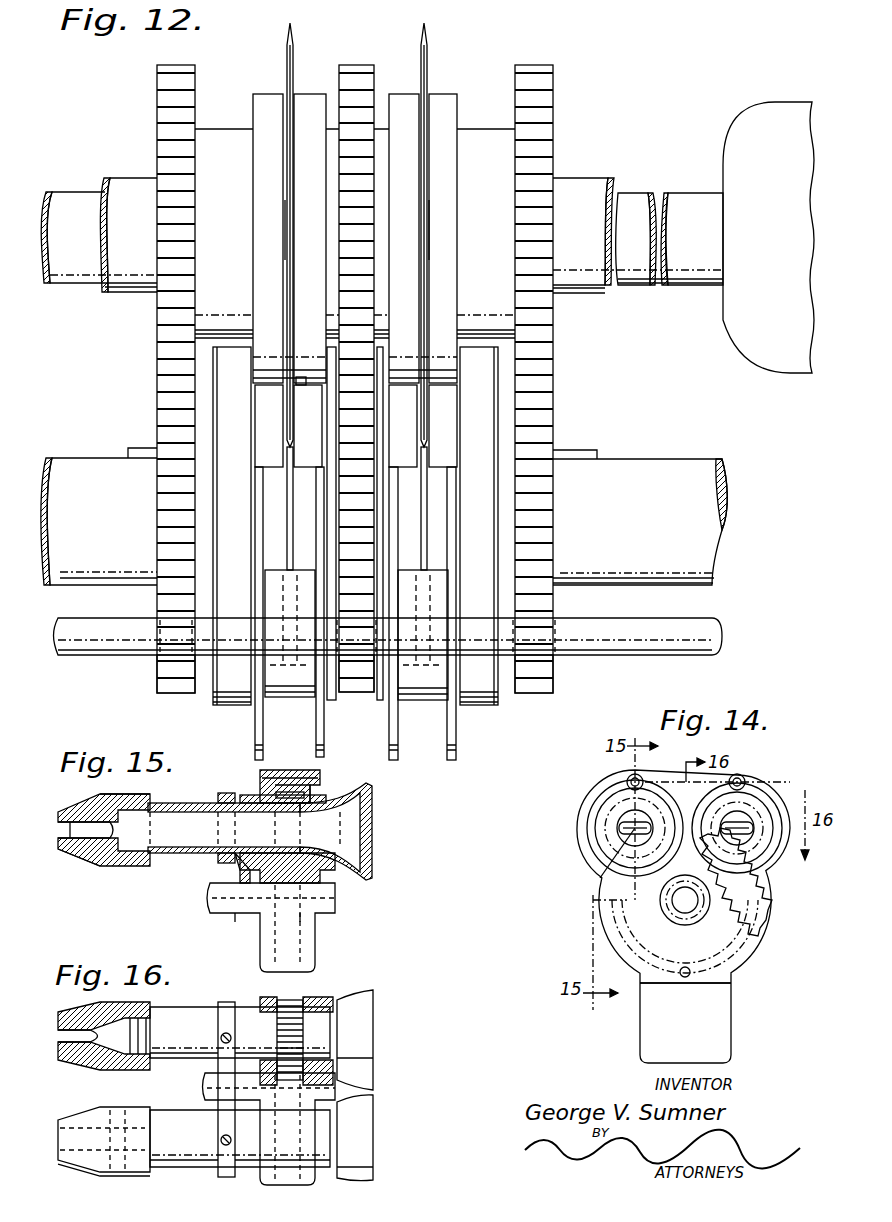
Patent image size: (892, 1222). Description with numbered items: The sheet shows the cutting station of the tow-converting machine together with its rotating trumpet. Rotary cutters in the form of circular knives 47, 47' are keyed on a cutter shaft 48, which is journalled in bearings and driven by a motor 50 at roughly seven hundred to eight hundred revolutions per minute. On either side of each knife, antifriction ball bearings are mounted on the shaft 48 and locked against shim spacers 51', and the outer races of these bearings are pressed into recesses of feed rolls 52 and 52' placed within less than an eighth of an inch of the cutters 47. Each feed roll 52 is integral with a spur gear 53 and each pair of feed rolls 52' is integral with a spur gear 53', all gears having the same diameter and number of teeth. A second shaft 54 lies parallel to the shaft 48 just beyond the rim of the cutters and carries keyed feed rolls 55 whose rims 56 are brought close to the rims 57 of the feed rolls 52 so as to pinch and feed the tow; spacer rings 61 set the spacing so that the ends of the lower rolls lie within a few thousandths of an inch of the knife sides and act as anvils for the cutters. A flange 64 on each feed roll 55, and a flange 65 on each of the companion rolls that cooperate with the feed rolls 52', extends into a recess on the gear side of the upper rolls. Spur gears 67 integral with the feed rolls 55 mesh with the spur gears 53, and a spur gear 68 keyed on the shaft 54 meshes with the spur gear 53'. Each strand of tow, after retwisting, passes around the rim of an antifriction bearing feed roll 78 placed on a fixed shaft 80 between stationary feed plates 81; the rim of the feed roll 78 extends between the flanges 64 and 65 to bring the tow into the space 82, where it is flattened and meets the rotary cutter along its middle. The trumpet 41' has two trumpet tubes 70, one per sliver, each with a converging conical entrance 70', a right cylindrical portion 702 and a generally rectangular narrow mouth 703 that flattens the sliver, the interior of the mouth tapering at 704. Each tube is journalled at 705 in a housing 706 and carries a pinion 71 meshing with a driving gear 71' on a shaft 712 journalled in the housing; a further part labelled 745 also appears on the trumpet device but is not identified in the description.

In FIG. 12, the circular knives 47 is at (306, 224).
In FIG. 12, the needle 47' is at (442, 223).
In FIG. 12, the cutter shaft 48 is at (62, 195).
In FIG. 12, the motor 50 is at (762, 106).
In FIG. 12, the shim spacers 51' is at (356, 230).
In FIG. 12, the feed rolls 52 is at (363, 254).
In FIG. 12, the feed rolls 52' is at (314, 210).
In FIG. 12, the spur gear 53 is at (352, 379).
In FIG. 12, the spur gear 53' is at (361, 354).
In FIG. 12, the second shaft 54 is at (90, 470).
In FIG. 12, the feed rolls 55 is at (280, 418).
In FIG. 12, the rims 56 is at (308, 426).
In FIG. 12, the rims 57 is at (308, 378).
In FIG. 12, the spacer rings 61 is at (288, 467).
In FIG. 12, the flange 64 is at (355, 526).
In FIG. 12, the flange 65 is at (381, 360).
In FIG. 12, the spur gears 67 is at (157, 677).
In FIG. 12, the spur gear 68 is at (355, 693).
In FIG. 12, the antifriction bearing feed roll 78 is at (268, 586).
In FIG. 12, the fixed shaft 80 is at (720, 631).
In FIG. 12, the stationary feed plates 81 is at (263, 754).
In FIG. 12, the space 82 is at (403, 388).
In FIG. 15, the trumpet tubes 70 is at (341, 812).
In FIG. 16, the trumpet tubes 70 is at (282, 1085).
In FIG. 14, the trumpet tubes 70 is at (659, 828).
In FIG. 15, the converging conical entrance 70' is at (332, 866).
In FIG. 14, the converging conical entrance 70' is at (654, 833).
In FIG. 15, the right cylindrical portion 702 is at (185, 812).
In FIG. 15, the narrow mouth 703 is at (63, 830).
In FIG. 16, the narrow mouth 703 is at (63, 1038).
In FIG. 14, the narrow mouth 703 is at (640, 810).
In FIG. 15, the taper 704 is at (100, 797).
In FIG. 15, the journal 705 is at (230, 876).
In FIG. 14, the housing 706 is at (720, 978).
In FIG. 15, the pinion 71 is at (296, 778).
In FIG. 16, the pinion 71 is at (271, 1040).
In FIG. 14, the pinion 71 is at (705, 794).
In FIG. 16, the driving gear 71' is at (359, 1062).
In FIG. 14, the driving gear 71' is at (620, 901).
In FIG. 15, the shaft 712 is at (215, 903).
In FIG. 16, the shaft 712 is at (210, 1088).
In FIG. 14, the shaft 712 is at (687, 915).
In FIG. 16, the collar 745 is at (250, 1008).
In FIG. 15, the trumpet 41' is at (229, 885).
In FIG. 16, the trumpet 41' is at (221, 1038).
In FIG. 14, the trumpet 41' is at (665, 916).